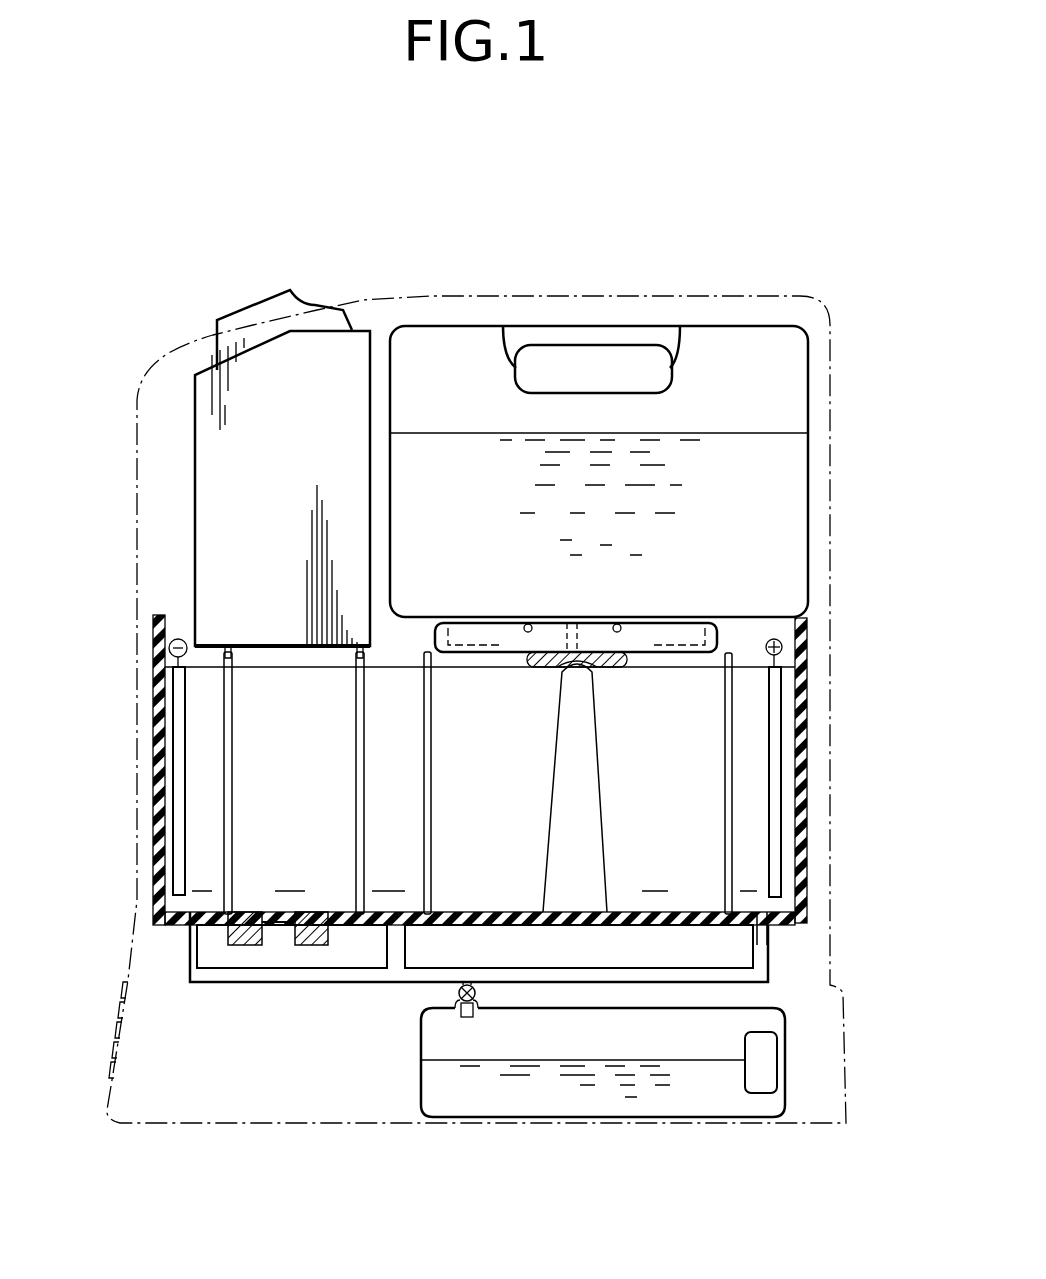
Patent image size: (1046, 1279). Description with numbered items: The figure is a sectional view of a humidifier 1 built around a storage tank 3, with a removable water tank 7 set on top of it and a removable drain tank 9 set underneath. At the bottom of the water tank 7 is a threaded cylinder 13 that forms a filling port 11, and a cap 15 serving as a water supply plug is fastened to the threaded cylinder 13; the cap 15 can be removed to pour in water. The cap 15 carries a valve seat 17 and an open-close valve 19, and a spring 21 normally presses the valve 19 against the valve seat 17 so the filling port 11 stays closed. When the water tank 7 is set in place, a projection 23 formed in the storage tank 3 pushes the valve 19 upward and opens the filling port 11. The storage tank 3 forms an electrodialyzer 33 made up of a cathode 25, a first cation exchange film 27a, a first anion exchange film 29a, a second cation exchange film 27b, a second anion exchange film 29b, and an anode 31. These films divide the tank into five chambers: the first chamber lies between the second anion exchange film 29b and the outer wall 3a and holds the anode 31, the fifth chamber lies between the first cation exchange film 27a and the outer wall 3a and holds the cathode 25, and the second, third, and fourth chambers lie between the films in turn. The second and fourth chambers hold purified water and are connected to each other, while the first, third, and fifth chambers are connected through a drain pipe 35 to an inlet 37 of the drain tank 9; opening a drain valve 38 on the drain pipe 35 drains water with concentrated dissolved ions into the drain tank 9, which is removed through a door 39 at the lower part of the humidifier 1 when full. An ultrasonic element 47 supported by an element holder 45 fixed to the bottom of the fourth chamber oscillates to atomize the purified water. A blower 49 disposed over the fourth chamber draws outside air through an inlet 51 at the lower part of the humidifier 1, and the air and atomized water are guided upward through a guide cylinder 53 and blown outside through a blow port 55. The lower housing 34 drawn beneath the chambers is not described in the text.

The humidifier 1 is at (830, 318).
The storage tank 3 is at (479, 770).
The outer wall 3a is at (170, 793).
The water tank 7 is at (808, 398).
The drain tank 9 is at (770, 1010).
The filling port 11 is at (594, 595).
The threaded cylinder 13 is at (480, 636).
The cap 15 is at (718, 636).
The valve seat 17 is at (520, 642).
The open-close valve 19 is at (578, 620).
The spring 21 is at (600, 668).
The projection 23 is at (585, 813).
The cathode 25 is at (175, 705).
The first cation exchange film 27a is at (228, 712).
The second cation exchange film 27b is at (430, 722).
The first anion exchange film 29a is at (357, 750).
The second anion exchange film 29b is at (725, 735).
The anode 31 is at (778, 788).
The electrodialyzer 33 is at (750, 820).
The lower housing 34 is at (478, 940).
The drain pipe 35 is at (655, 968).
The inlet 37 is at (460, 1015).
The drain valve 38 is at (480, 993).
The door 39 is at (845, 1083).
The element holder 45 is at (310, 945).
The ultrasonic element 47 is at (275, 927).
The blower 49 is at (190, 450).
The inlet 51 is at (118, 1025).
The guide cylinder 53 is at (200, 522).
The blow port 55 is at (248, 308).